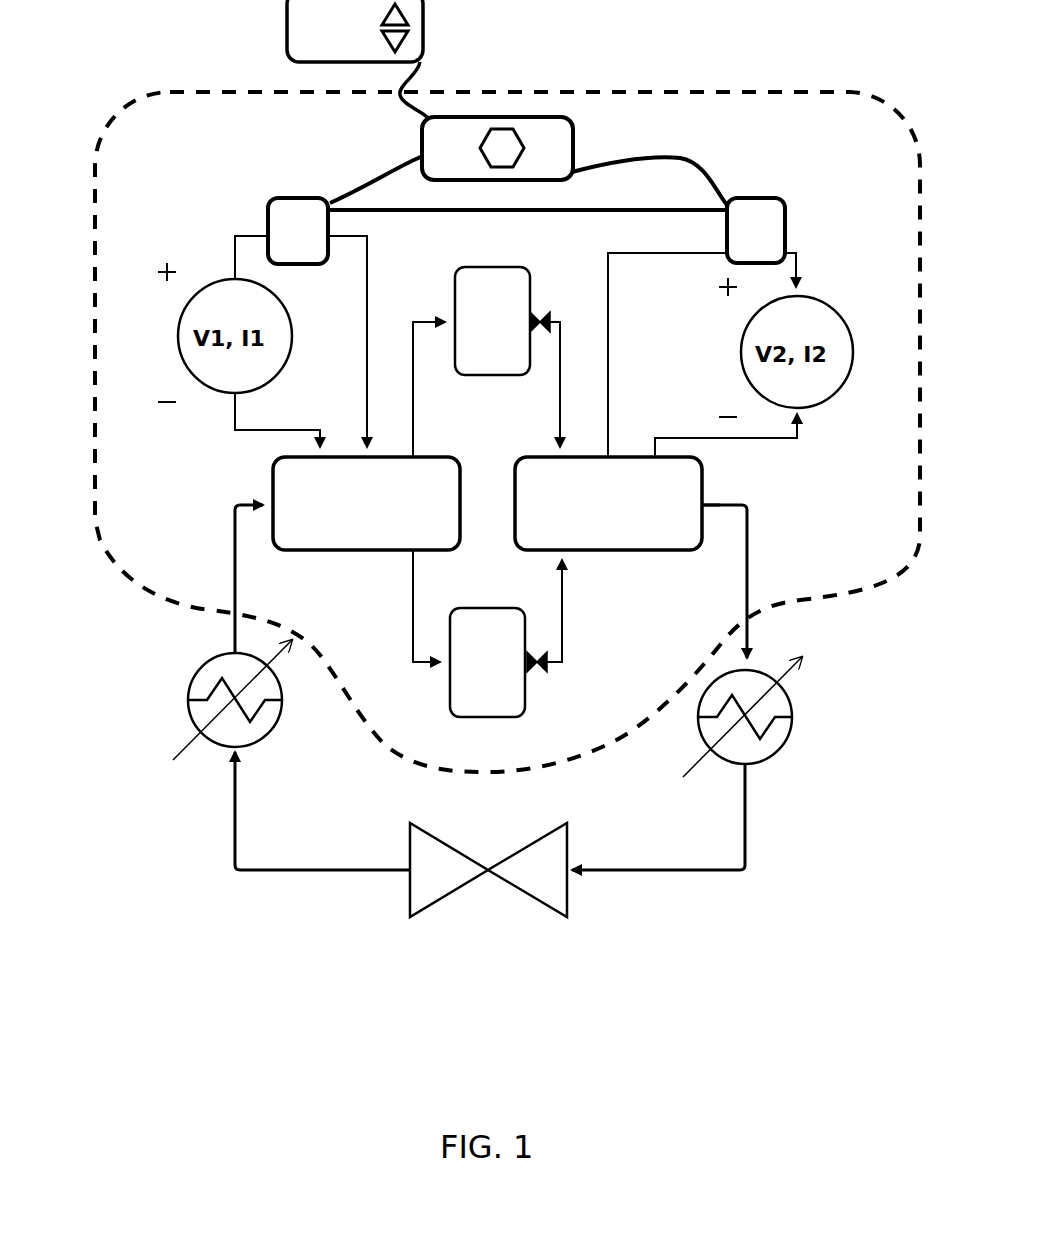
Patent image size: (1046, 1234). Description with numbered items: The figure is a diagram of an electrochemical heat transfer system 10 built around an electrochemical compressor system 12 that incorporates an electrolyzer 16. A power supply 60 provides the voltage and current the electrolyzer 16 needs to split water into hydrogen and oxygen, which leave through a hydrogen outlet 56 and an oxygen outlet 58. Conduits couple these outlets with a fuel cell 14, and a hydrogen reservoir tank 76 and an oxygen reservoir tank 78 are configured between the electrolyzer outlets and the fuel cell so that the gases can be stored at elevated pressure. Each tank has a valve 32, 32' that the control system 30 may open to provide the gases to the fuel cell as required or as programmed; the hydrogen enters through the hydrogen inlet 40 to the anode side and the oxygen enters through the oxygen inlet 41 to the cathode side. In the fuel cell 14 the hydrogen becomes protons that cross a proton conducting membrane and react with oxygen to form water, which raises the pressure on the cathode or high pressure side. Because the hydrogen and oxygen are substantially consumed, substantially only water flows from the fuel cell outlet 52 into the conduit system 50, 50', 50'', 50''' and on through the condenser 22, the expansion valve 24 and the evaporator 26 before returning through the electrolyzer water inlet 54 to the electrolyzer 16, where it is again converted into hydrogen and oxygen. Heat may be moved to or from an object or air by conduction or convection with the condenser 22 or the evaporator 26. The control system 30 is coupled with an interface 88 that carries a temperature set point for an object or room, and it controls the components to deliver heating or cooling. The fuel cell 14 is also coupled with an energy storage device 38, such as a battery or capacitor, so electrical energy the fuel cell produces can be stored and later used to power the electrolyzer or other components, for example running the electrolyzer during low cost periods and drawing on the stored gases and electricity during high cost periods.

The electrochemical heat transfer system 10 is at (282, 88).
The electrochemical compressor system 12 is at (272, 896).
The fuel cell 14 is at (690, 503).
The electrolyzer 16 is at (282, 492).
The condenser 22 is at (755, 690).
The expansion valve 24 is at (555, 895).
The evaporator 26 is at (230, 675).
The control system 30 is at (560, 145).
The valve 32 is at (557, 302).
The valve 32' is at (557, 694).
The energy storage device 38 is at (766, 212).
The hydrogen inlet 40 is at (565, 453).
The oxygen inlet 41 is at (568, 556).
The conduit system 50 is at (791, 581).
The conduit system 50' is at (692, 864).
The conduit system 50'' is at (290, 858).
The conduit system 50''' is at (181, 552).
The outlet 52 is at (724, 515).
The electrolyzer water inlet 54 is at (262, 512).
The hydrogen outlet 56 is at (413, 447).
The oxygen outlet 58 is at (418, 555).
The power supply 60 is at (292, 202).
The hydrogen reservoir tank 76 is at (505, 282).
The oxygen reservoir tank 78 is at (478, 702).
The interface 88 is at (423, 50).